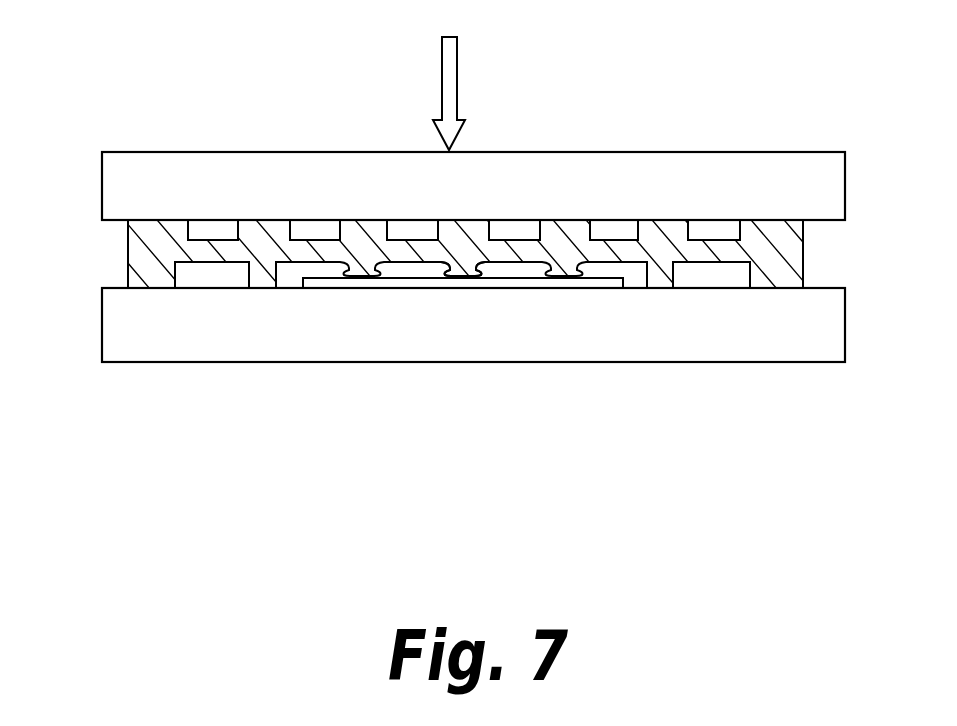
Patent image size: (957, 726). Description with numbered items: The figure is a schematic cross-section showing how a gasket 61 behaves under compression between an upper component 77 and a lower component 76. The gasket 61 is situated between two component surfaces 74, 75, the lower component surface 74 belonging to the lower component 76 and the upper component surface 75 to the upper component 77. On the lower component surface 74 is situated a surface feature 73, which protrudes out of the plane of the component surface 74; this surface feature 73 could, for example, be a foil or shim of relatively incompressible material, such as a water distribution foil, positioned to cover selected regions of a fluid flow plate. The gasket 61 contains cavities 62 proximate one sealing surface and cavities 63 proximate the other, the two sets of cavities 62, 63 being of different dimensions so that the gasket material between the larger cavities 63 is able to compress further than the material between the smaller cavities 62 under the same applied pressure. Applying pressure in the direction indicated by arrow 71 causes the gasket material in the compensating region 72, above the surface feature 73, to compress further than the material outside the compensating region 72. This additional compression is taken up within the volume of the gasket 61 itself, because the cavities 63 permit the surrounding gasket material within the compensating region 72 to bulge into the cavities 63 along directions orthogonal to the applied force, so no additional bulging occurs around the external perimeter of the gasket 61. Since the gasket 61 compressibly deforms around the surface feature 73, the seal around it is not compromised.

The gasket 61 is at (127, 250).
The cavities 62 is at (618, 228).
The cavities 63 is at (507, 262).
The arrow 71 is at (458, 60).
The compensating region 72 is at (463, 262).
The surface feature 73 is at (327, 283).
The lower component surface 74 is at (117, 288).
The upper component surface 75 is at (827, 222).
The lower component 76 is at (604, 341).
The upper component 77 is at (404, 189).